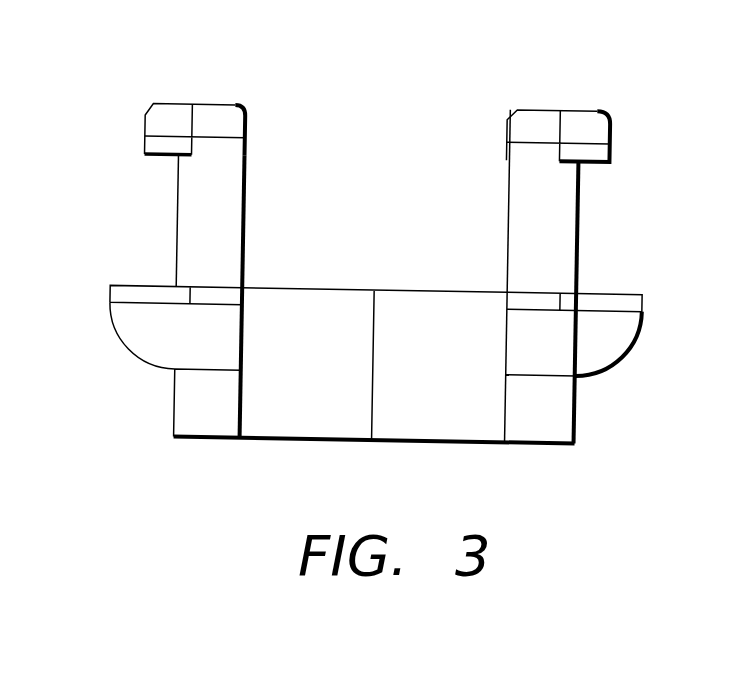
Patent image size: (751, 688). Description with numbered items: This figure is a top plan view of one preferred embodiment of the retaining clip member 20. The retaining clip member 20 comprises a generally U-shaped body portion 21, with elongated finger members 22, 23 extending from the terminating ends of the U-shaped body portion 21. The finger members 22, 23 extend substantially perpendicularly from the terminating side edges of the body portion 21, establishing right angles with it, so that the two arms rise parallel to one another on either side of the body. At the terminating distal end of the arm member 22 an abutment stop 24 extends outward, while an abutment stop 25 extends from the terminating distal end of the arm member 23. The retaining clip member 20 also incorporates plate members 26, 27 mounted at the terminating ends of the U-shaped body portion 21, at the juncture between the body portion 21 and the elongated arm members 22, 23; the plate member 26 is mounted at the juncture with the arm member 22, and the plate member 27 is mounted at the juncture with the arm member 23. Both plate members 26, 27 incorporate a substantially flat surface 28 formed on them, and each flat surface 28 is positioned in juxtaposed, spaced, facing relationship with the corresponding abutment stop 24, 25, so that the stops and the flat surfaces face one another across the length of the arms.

The retaining clip member 20 is at (595, 458).
The U-shaped body portion 21 is at (300, 413).
The finger member 22 is at (177, 192).
The finger member 23 is at (576, 227).
The abutment stop 24 is at (165, 128).
The abutment stop 25 is at (583, 127).
The plate member 26 is at (130, 340).
The plate member 27 is at (617, 353).
The flat surface 28 is at (150, 286).